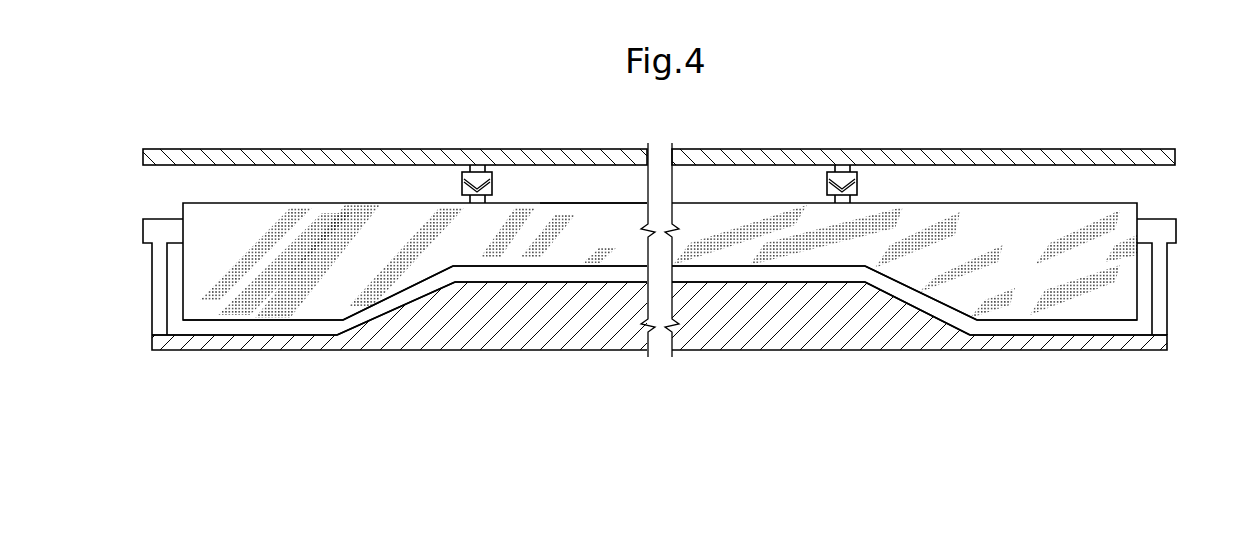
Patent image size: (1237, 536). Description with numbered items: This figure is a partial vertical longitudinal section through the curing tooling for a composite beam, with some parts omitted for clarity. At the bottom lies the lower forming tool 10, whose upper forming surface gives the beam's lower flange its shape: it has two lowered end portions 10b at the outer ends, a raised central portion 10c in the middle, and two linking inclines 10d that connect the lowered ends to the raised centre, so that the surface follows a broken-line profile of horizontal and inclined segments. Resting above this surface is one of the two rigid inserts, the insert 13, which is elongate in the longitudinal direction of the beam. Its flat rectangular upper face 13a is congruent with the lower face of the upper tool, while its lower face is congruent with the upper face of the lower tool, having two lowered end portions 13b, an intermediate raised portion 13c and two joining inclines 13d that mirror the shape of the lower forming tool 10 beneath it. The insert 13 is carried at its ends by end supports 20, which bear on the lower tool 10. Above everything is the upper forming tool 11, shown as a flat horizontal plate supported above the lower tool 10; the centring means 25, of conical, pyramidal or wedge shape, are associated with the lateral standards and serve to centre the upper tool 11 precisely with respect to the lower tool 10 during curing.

The lower forming tool 10 is at (430, 340).
The lowered end portions 10b is at (190, 329).
The raised central portion 10c is at (604, 277).
The linking inclines 10d is at (380, 308).
The upper forming tool 11 is at (243, 153).
The rigid insert 13 is at (357, 220).
The flat rectangular upper face 13a is at (540, 203).
The lowered end portions 13b is at (253, 322).
The intermediate raised portion 13c is at (568, 267).
The joining inclines 13d is at (343, 321).
The end supports 20 is at (160, 263).
The centring means 25 is at (447, 185).